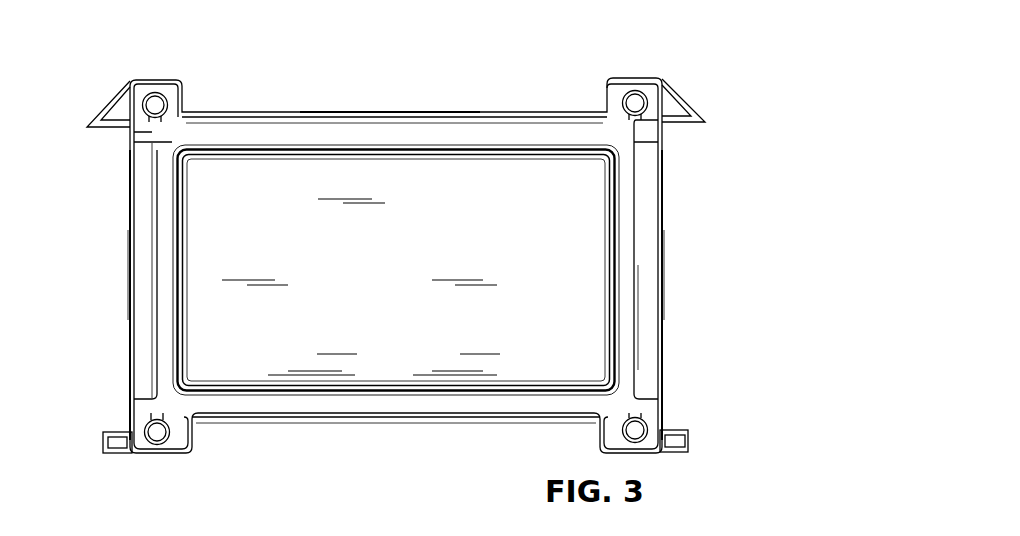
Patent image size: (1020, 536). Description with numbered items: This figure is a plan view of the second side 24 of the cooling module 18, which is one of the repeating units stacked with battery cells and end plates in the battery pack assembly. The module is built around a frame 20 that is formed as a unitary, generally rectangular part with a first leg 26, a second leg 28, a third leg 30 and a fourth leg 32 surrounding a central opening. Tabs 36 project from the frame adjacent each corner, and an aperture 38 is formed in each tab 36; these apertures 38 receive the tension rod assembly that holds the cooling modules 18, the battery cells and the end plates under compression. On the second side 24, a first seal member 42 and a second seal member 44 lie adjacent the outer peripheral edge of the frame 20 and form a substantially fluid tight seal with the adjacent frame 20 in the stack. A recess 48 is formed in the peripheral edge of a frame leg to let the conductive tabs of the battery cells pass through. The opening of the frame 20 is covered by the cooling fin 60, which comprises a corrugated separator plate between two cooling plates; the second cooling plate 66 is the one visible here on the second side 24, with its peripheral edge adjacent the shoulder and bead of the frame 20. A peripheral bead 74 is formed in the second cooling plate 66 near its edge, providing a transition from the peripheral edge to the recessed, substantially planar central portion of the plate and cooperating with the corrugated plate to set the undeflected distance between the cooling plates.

The cooling module 18 is at (673, 70).
The frame 20 is at (537, 113).
The second side 24 is at (205, 118).
The first leg 26 is at (388, 112).
The second leg 28 is at (397, 423).
The third leg 30 is at (663, 378).
The fourth leg 32 is at (130, 398).
The tabs 36 is at (142, 80).
The aperture 38 is at (163, 92).
The first seal member 42 is at (662, 138).
The second seal member 44 is at (660, 415).
The recess 48 is at (132, 268).
The cooling fin 60 is at (448, 125).
The second cooling plate 66 is at (330, 170).
The peripheral bead 74 is at (273, 153).